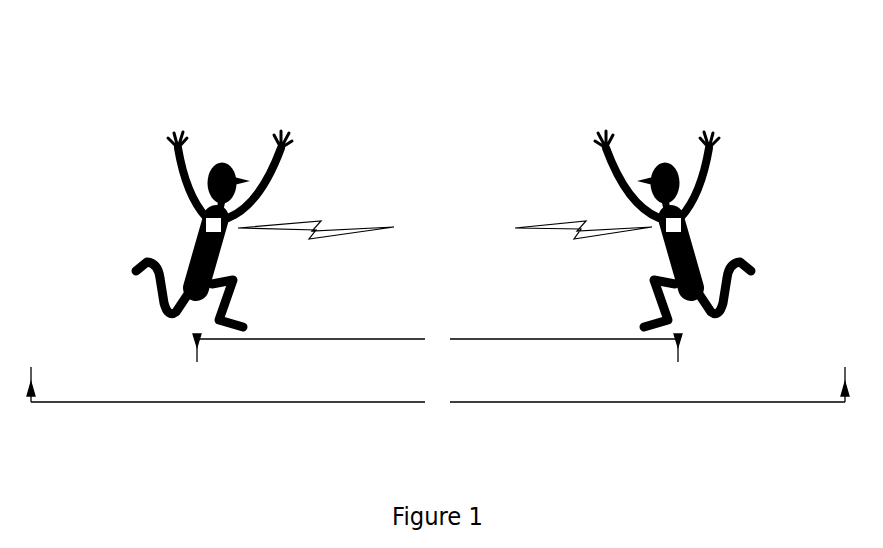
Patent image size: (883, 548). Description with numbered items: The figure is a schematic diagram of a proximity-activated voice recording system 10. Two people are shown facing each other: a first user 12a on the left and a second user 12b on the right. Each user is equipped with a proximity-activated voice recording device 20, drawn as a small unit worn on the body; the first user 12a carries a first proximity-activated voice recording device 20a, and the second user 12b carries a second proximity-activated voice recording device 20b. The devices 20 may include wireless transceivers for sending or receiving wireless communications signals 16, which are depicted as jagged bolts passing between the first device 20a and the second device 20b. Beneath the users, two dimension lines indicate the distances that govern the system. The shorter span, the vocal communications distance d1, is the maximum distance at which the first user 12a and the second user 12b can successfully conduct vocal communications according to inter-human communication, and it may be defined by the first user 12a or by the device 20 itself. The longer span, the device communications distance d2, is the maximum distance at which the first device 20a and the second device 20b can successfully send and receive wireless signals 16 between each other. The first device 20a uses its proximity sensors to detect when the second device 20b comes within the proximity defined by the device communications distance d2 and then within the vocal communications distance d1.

The proximity-activated voice recording system 10 is at (437, 73).
The first user 12a is at (224, 150).
The second user 12b is at (665, 157).
The wireless communications signals 16 is at (583, 222).
The proximity-activated voice recording device 20 is at (672, 248).
The first proximity-activated voice recording device 20a is at (203, 225).
The second proximity-activated voice recording device 20b is at (687, 223).
The vocal communications distance d1 is at (437, 344).
The device communications distance d2 is at (438, 390).